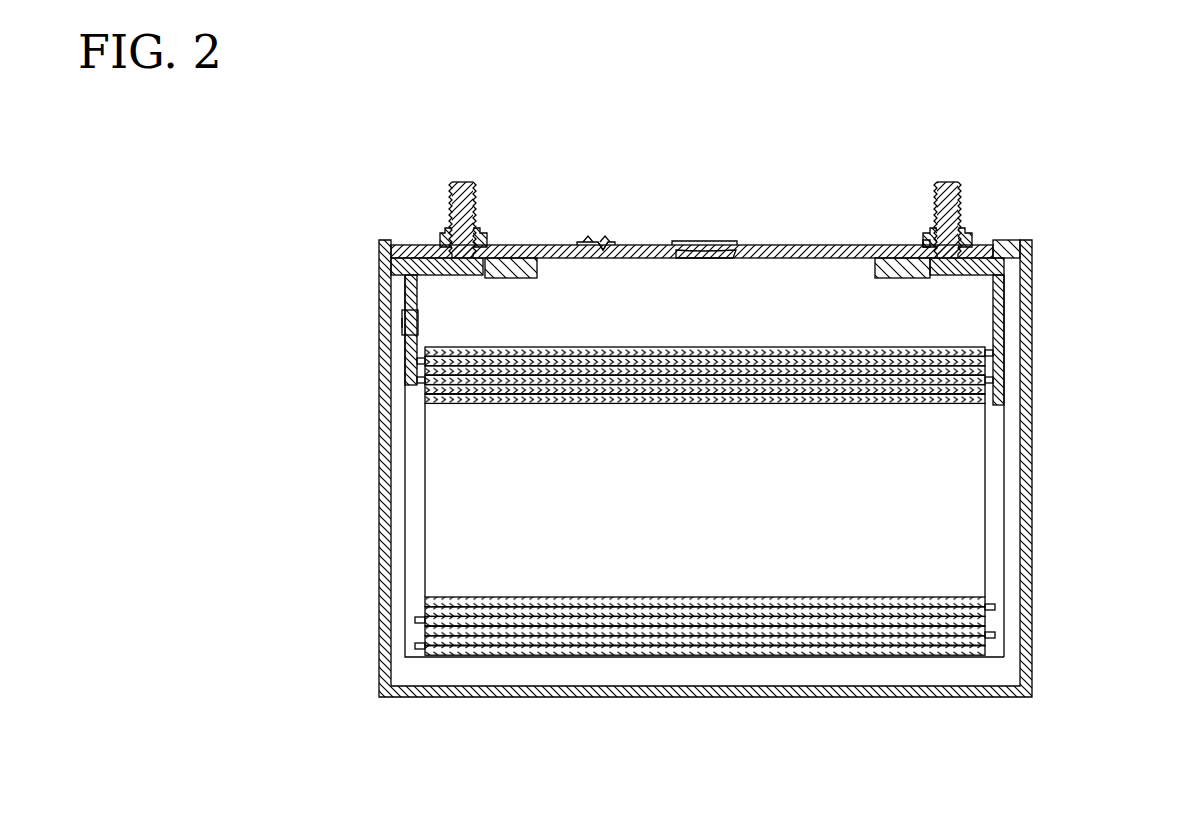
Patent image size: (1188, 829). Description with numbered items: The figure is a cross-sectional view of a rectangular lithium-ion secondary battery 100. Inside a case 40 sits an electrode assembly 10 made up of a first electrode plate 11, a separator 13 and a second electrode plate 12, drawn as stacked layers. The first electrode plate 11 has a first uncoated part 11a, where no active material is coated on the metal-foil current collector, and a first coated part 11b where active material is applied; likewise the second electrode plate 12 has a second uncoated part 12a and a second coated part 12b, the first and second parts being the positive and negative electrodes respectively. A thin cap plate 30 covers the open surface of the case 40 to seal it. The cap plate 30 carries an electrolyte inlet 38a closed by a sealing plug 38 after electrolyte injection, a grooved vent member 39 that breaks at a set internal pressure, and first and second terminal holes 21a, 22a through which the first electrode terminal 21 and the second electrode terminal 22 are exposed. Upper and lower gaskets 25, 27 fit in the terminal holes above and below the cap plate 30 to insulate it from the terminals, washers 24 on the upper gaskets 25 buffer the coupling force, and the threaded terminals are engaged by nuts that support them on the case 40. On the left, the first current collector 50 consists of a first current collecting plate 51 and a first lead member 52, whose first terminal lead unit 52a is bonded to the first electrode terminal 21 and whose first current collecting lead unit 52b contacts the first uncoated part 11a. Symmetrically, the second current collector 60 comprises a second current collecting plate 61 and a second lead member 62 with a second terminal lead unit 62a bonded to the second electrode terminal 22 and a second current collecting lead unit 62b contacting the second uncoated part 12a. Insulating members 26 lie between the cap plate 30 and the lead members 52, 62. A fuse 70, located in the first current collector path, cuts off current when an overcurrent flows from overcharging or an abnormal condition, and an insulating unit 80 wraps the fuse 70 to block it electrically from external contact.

The secondary battery 100 is at (696, 86).
The electrode assembly 10 is at (709, 577).
The first electrode plate 11 is at (687, 577).
The first uncoated part 11a is at (415, 650).
The first coated part 11b is at (487, 655).
The second electrode plate 12 is at (728, 579).
The second uncoated part 12a is at (990, 655).
The second coated part 12b is at (933, 655).
The separator 13 is at (666, 634).
The first electrode terminal 21 is at (466, 187).
The first terminal hole 21a is at (480, 236).
The second electrode terminal 22 is at (943, 187).
The second terminal hole 22a is at (927, 235).
The washer 24 is at (930, 243).
The upper gasket 25 is at (968, 242).
The insulating member 26 is at (530, 248).
The lower gasket 27 is at (928, 257).
The cap plate 30 is at (790, 245).
The sealing plug 38 is at (605, 202).
The electrolyte inlet 38a is at (605, 243).
The vent member 39 is at (700, 243).
The case 40 is at (1033, 583).
The first current collector 50 is at (616, 456).
The first current collecting plate 51 is at (398, 507).
The first lead member 52 is at (379, 320).
The first terminal lead unit 52a is at (398, 270).
The first current collecting lead unit 52b is at (406, 300).
The second current collector 60 is at (1054, 457).
The second current collecting plate 61 is at (1010, 508).
The second lead member 62 is at (1032, 331).
The second terminal lead unit 62a is at (1004, 275).
The second current collecting lead unit 62b is at (1005, 310).
The fuse 70 is at (406, 334).
The insulating unit 80 is at (402, 325).